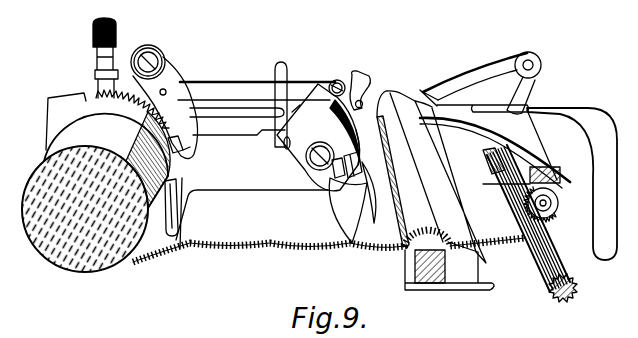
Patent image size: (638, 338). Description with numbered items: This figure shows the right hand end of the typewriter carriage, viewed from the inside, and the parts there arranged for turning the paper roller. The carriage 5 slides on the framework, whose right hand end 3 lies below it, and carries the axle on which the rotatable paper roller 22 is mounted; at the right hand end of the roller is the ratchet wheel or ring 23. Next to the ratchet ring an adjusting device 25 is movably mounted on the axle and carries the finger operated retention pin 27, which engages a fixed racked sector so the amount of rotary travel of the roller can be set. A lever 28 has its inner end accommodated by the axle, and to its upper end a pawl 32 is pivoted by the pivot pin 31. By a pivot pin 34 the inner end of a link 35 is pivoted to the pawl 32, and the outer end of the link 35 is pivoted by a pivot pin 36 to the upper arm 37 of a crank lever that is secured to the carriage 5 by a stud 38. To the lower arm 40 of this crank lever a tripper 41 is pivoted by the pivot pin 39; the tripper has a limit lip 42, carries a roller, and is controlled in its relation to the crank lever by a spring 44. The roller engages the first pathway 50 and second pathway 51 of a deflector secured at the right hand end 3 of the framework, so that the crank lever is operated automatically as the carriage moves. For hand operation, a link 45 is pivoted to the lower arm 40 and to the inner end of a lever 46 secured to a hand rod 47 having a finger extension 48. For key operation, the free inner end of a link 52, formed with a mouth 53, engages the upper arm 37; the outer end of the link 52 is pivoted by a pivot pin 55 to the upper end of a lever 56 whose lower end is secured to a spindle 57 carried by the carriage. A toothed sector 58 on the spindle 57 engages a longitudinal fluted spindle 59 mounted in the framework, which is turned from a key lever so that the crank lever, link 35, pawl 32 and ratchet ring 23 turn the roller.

The right hand end 3 is at (252, 215).
The carriage 5 is at (507, 140).
The paper roller 22 is at (96, 192).
The ratchet wheel or ring 23 is at (171, 144).
The adjusting device 25 is at (105, 88).
The finger operated retention pin 27 is at (93, 40).
The lever 28 is at (166, 91).
The pivot pin 31 is at (140, 92).
The pawl 32 is at (190, 147).
The pivot pin 34 is at (182, 85).
The link 35 is at (248, 95).
The pivot pin 36 is at (340, 80).
The upper arm 37 is at (320, 120).
The stud 38 is at (309, 165).
The pivot pin 39 is at (357, 160).
The lower arm 40 is at (335, 168).
The tripper 41 is at (380, 117).
The limit lip 42 is at (345, 177).
The spring 44 is at (345, 130).
The link 45 is at (292, 112).
The lever 46 is at (273, 93).
The hand rod 47 is at (457, 85).
The finger extension 48 is at (603, 212).
The first pathway 50 is at (352, 222).
The second pathway 51 is at (372, 207).
The link 52 is at (440, 102).
The mouth 53 is at (352, 150).
The pivot pin 55 is at (533, 63).
The lever 56 is at (522, 88).
The spindle 57 is at (546, 199).
The toothed sector 58 is at (546, 226).
The fluted spindle 59 is at (548, 282).